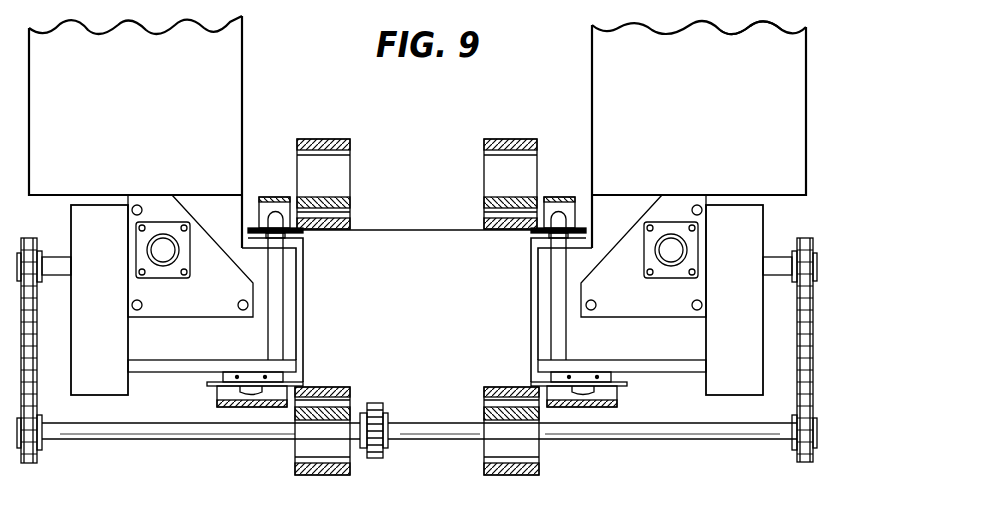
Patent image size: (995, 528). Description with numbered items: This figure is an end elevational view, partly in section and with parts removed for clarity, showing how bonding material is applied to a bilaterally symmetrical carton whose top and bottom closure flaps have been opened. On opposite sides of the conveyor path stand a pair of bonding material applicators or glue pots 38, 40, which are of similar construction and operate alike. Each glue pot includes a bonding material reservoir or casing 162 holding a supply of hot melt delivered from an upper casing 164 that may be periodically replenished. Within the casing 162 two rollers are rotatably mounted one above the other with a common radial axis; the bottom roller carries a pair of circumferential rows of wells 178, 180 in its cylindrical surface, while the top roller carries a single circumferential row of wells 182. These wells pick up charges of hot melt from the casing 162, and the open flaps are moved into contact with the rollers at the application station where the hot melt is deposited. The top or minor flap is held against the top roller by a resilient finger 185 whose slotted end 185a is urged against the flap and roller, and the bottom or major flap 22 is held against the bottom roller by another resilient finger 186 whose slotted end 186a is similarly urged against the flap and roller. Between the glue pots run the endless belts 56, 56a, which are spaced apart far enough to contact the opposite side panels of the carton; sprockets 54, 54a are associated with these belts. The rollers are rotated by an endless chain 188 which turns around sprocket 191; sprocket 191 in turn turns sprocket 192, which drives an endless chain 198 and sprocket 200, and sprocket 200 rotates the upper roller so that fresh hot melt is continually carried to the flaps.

The glue pot 38 is at (245, 60).
The glue pot 40 is at (591, 58).
The upper casing 164 is at (748, 14).
The sprocket 54a is at (346, 108).
The sprocket 54 is at (510, 139).
The endless belt 56a is at (345, 475).
The endless belt 56 is at (508, 475).
The resilient finger 185 is at (553, 198).
The slotted end 185a is at (573, 228).
The circumferential row of wells 182 is at (578, 255).
The circumferential row of wells 180 is at (625, 339).
The major flap 22 is at (613, 384).
The casing 162 is at (685, 345).
The circumferential row of wells 178 is at (566, 382).
The resilient finger 186 is at (610, 400).
The slotted end 186a is at (600, 406).
The endless chain 188 is at (388, 410).
The sprocket 191 is at (385, 447).
The endless chain 198 is at (850, 324).
The sprocket 200 is at (850, 224).
The sprocket 192 is at (818, 440).